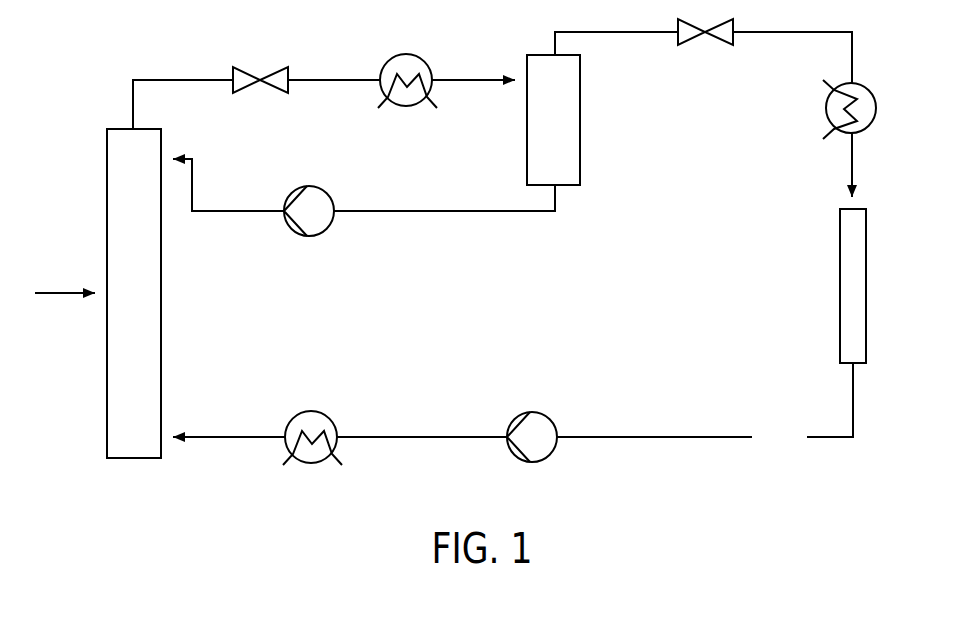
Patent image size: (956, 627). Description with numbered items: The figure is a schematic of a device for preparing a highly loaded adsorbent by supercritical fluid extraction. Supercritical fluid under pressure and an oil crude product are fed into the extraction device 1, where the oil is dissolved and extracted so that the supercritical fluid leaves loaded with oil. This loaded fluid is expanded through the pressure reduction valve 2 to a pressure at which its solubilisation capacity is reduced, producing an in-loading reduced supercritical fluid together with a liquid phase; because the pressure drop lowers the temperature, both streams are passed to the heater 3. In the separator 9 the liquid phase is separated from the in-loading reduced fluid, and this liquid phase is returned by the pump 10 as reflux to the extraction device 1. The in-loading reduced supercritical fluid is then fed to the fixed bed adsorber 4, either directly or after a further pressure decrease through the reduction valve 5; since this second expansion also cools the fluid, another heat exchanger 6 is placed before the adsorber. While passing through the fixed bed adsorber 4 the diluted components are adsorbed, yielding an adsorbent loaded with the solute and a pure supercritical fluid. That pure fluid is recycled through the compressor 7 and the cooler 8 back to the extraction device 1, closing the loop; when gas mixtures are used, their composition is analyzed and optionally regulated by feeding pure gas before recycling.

The extraction device 1 is at (127, 276).
The pressure reduction valve 2 is at (251, 133).
The heater 3 is at (402, 149).
The fixed bed adsorber 4 is at (800, 296).
The reduction valve 5 is at (697, 89).
The heat exchanger 6 is at (776, 128).
The compressor 7 is at (523, 395).
The cooler 8 is at (302, 396).
The separator 9 is at (600, 143).
The pump 10 is at (298, 286).